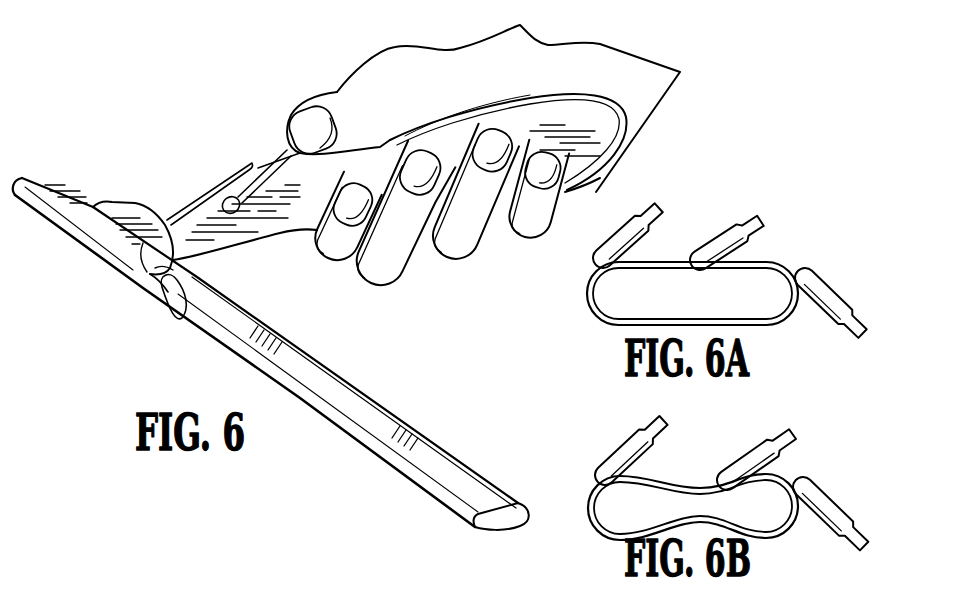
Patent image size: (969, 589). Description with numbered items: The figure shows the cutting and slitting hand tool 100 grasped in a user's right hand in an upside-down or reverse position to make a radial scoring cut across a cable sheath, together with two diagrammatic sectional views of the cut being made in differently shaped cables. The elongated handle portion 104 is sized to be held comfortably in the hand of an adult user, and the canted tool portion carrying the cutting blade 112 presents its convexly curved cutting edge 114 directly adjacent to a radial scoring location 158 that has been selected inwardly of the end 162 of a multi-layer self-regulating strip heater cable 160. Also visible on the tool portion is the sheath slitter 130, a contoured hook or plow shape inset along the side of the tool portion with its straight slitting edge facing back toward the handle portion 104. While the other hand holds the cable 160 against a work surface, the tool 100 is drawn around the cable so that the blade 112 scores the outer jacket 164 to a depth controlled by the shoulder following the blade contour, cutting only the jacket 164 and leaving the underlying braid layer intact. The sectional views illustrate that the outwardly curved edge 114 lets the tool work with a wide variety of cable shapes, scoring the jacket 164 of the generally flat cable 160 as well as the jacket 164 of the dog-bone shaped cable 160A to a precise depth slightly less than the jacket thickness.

In FIG. 6, the cutting and slitting hand tool 100 is at (292, 187).
In FIG. 6, the handle portion 104 is at (593, 162).
In FIG. 6A, the cutting blade 112 is at (657, 203).
In FIG. 6B, the cutting blade 112 is at (653, 418).
In FIG. 6, the curved cutting edge 114 is at (157, 280).
In FIG. 6, the sheath slitter 130 is at (232, 150).
In FIG. 6, the scoring location 158 is at (183, 312).
In FIG. 6, the cable 160 is at (362, 407).
In FIG. 6A, the cable 160 is at (603, 302).
In FIG. 6B, the dog-bone shaped cable 160A is at (760, 497).
In FIG. 6, the cable end 162 is at (35, 176).
In FIG. 6, the cable jacket 164 is at (48, 178).
In FIG. 6A, the cable jacket 164 is at (620, 325).
In FIG. 6B, the cable jacket 164 is at (593, 493).